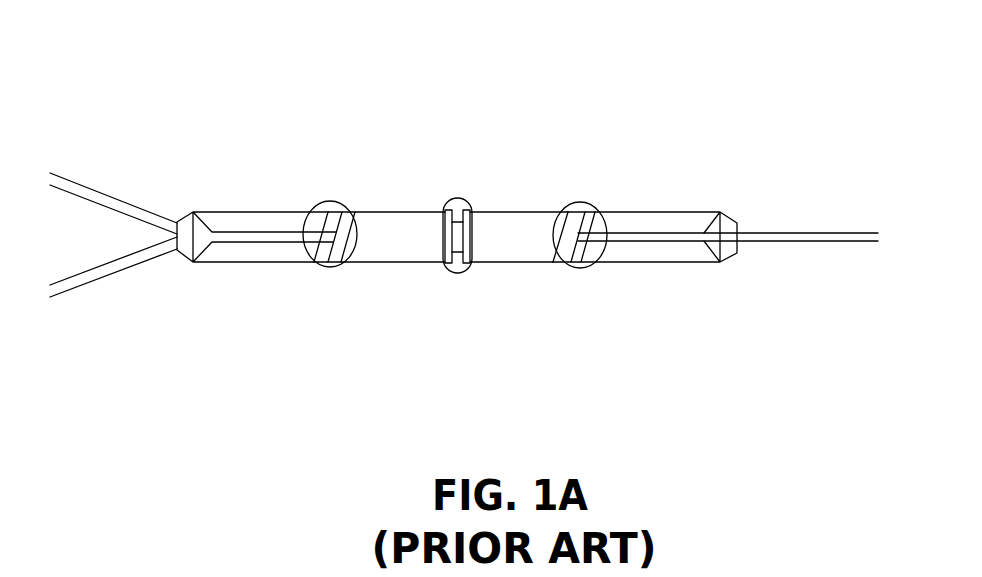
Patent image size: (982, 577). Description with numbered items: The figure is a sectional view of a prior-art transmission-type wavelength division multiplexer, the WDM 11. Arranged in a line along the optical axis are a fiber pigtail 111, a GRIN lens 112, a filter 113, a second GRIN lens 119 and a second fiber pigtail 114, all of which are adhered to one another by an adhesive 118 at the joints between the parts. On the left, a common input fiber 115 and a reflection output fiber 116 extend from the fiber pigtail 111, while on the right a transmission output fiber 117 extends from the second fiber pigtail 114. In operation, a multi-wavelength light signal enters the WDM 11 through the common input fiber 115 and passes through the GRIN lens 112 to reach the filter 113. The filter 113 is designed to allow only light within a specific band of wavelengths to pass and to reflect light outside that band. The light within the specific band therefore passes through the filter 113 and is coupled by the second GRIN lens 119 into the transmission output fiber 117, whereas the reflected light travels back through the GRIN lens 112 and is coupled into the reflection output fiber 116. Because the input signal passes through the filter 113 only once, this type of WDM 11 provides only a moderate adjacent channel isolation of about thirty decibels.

The WDM 11 is at (787, 29).
The fiber pigtail 111 is at (258, 220).
The GRIN lens 112 is at (402, 222).
The filter 113 is at (457, 233).
The second fiber pigtail 114 is at (662, 222).
The common input fiber 115 is at (123, 200).
The reflection output fiber 116 is at (98, 273).
The transmission output fiber 117 is at (808, 237).
The adhesive 118 is at (325, 268).
The second GRIN lens 119 is at (520, 223).